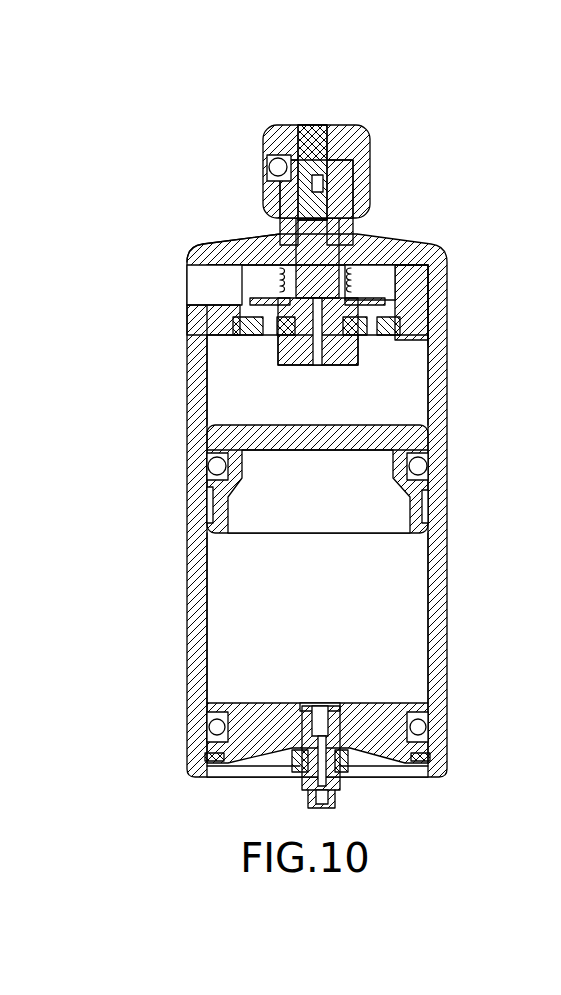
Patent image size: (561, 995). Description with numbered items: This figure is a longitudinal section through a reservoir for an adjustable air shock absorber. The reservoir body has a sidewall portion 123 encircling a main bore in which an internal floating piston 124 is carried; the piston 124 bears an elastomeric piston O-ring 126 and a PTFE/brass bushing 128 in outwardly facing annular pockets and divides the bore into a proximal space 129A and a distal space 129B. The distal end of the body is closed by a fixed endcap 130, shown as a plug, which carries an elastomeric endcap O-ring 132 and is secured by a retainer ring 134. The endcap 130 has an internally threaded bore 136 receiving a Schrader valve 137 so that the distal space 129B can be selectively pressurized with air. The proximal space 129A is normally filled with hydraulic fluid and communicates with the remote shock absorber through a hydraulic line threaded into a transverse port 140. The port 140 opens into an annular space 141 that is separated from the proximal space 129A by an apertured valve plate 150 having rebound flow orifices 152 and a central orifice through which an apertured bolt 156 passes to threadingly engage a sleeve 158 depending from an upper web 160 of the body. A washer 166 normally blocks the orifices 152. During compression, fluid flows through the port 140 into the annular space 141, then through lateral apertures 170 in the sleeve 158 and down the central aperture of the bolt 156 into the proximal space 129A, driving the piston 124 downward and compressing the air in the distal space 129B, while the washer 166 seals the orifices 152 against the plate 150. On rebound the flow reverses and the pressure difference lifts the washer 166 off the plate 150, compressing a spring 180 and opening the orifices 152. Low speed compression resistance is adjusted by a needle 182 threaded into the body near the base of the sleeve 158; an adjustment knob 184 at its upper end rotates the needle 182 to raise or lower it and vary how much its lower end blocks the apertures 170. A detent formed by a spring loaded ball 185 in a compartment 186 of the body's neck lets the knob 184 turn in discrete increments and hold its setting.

The sidewall portion 123 is at (198, 625).
The internal floating piston 124 is at (262, 528).
The piston O-ring 126 is at (428, 455).
The bushing 128 is at (427, 497).
The proximal space 129A is at (420, 378).
The distal space 129B is at (412, 613).
The endcap 130 is at (260, 743).
The endcap O-ring 132 is at (432, 723).
The retainer ring 134 is at (428, 768).
The internally threaded bore 136 is at (322, 706).
The Schrader valve 137 is at (348, 768).
The port 140 is at (207, 295).
The annular space 141 is at (430, 262).
The valve plate 150 is at (446, 330).
The rebound flow orifices 152 is at (276, 322).
The apertured bolt 156 is at (342, 355).
The sleeve 158 is at (420, 300).
The upper web 160 is at (398, 270).
The washer 166 is at (258, 300).
The lateral apertures 170 is at (287, 272).
The spring 180 is at (270, 287).
The needle 182 is at (323, 222).
The adjustment knob 184 is at (340, 142).
The spring loaded ball 185 is at (278, 160).
The compartment 186 is at (283, 193).